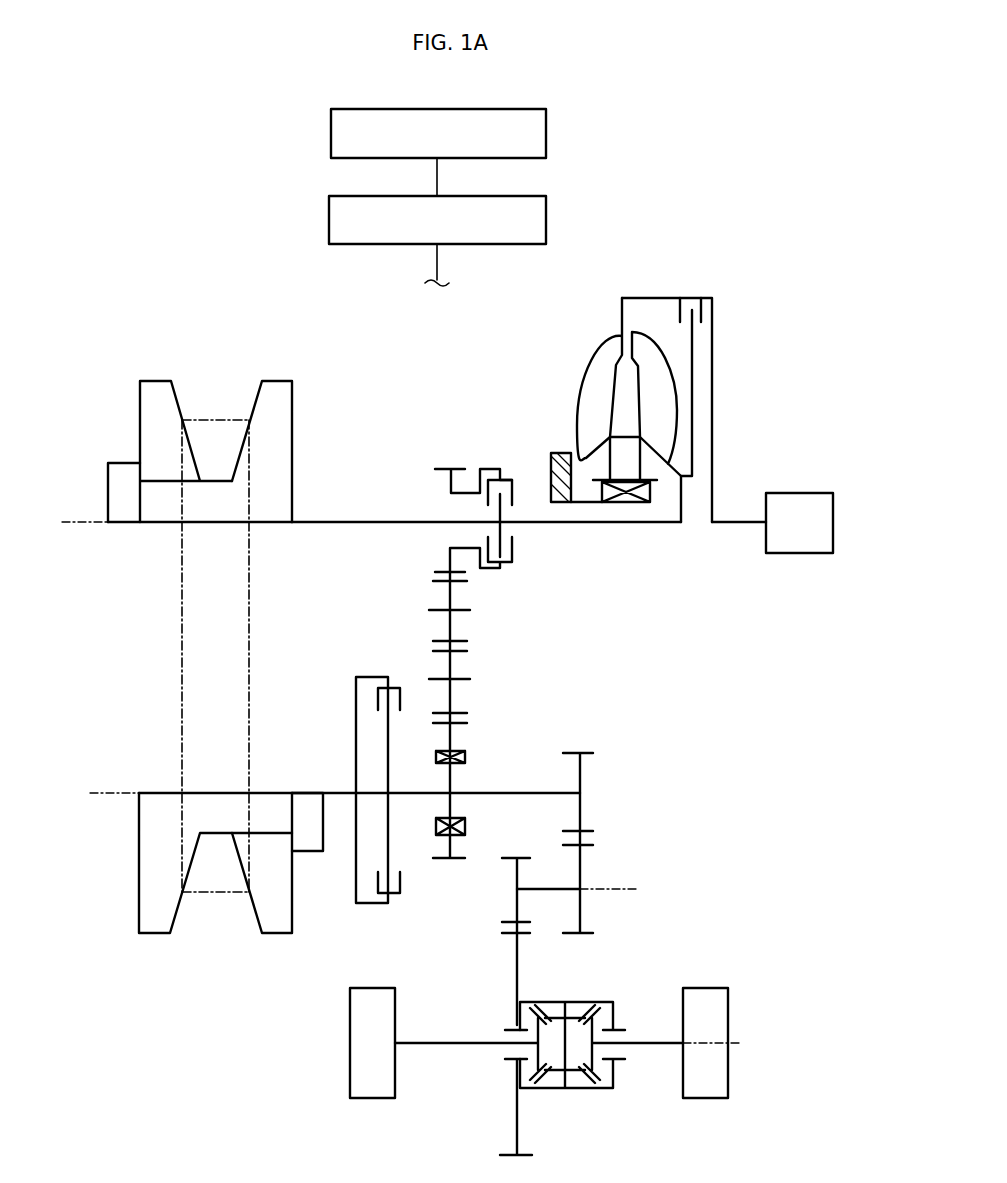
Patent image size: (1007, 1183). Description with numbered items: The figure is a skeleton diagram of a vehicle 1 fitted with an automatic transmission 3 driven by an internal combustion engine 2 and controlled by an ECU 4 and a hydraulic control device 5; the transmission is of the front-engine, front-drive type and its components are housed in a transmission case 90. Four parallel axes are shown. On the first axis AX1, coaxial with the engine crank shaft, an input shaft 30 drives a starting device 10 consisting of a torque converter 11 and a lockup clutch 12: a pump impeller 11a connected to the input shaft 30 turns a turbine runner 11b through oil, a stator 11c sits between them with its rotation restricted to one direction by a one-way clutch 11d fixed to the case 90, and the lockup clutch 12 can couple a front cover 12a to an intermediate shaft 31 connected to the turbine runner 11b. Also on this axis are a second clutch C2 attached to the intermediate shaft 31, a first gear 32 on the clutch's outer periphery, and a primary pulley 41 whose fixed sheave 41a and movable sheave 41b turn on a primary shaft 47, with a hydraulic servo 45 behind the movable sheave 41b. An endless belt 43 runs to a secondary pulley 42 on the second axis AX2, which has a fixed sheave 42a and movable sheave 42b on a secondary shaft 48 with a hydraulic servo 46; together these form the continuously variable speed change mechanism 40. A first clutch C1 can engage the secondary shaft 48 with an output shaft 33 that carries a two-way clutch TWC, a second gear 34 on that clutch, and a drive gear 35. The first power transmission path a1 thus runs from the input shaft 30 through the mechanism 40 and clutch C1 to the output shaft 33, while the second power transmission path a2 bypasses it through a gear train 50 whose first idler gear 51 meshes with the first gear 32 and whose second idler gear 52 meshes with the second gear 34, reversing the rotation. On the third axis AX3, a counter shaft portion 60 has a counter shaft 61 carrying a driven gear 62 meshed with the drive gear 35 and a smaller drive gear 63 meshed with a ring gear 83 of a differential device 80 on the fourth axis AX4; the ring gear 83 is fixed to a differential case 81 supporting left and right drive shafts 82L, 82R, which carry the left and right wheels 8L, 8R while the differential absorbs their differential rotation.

The vehicle 1 is at (199, 110).
The internal combustion engine 2 is at (800, 492).
The automatic transmission 3 is at (168, 193).
The ECU 4 is at (352, 108).
The hydraulic control device 5 is at (360, 195).
The starting device 10 is at (600, 192).
The torque converter 11 is at (612, 270).
The pump impeller 11a is at (601, 346).
The turbine runner 11b is at (667, 378).
The stator 11c is at (615, 453).
The one-way clutch 11d is at (623, 503).
The lockup clutch 12 is at (708, 361).
The front cover 12a is at (712, 370).
The input shaft 30 is at (733, 556).
The intermediate shaft 31 is at (578, 523).
The first gear 32 is at (436, 468).
The output shaft 33 is at (480, 794).
The second gear 34 is at (455, 735).
The drive gear 35 is at (582, 778).
The continuously variable speed change mechanism 40 is at (122, 260).
The primary pulley 41 is at (292, 301).
The fixed sheave 41a is at (272, 380).
The movable sheave 41b is at (155, 380).
The secondary pulley 42 is at (140, 1012).
The fixed sheave 42a is at (157, 935).
The movable sheave 42b is at (272, 935).
The endless belt 43 is at (182, 725).
The hydraulic servo 45 is at (125, 523).
The hydraulic servo 46 is at (313, 852).
The primary shaft 47 is at (312, 523).
The secondary shaft 48 is at (343, 790).
The gear train 50 is at (542, 663).
The first idler gear 51 is at (455, 627).
The second idler gear 52 is at (455, 698).
The counter shaft portion 60 is at (662, 861).
The counter shaft 61 is at (548, 890).
The driven gear 62 is at (582, 873).
The drive gear 63 is at (515, 903).
The differential device 80 is at (606, 986).
The differential case 81 is at (590, 1089).
The left drive shaft 82L is at (453, 1046).
The right drive shaft 82R is at (652, 1046).
The ring gear 83 is at (515, 962).
The left wheel 8L is at (372, 1099).
The right wheel 8R is at (708, 1099).
The transmission case 90 is at (553, 452).
The first clutch C1 is at (356, 703).
The second clutch C2 is at (508, 479).
The two-way clutch TWC is at (455, 768).
The first axis AX1 is at (75, 522).
The second axis AX2 is at (110, 793).
The third axis AX3 is at (638, 889).
The fourth axis AX4 is at (740, 1043).
The first power transmission path a1 is at (346, 500).
The second power transmission path a2 is at (606, 639).